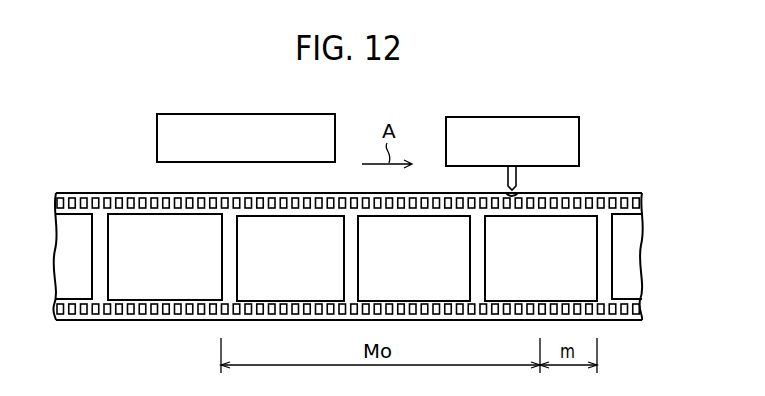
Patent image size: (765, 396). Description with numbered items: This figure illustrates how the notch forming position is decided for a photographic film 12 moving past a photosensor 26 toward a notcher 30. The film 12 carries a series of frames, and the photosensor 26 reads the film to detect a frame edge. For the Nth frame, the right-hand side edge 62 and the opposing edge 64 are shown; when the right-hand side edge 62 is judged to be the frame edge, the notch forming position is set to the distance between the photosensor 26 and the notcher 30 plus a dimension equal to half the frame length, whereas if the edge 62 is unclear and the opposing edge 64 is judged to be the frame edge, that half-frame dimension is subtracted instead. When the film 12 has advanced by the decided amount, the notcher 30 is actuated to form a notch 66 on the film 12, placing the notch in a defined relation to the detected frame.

The film 12 is at (102, 192).
The photosensor 26 is at (157, 115).
The notcher 30 is at (568, 117).
The right-hand side edge 62 is at (222, 275).
The edge 64 is at (108, 273).
The notch 66 is at (519, 192).